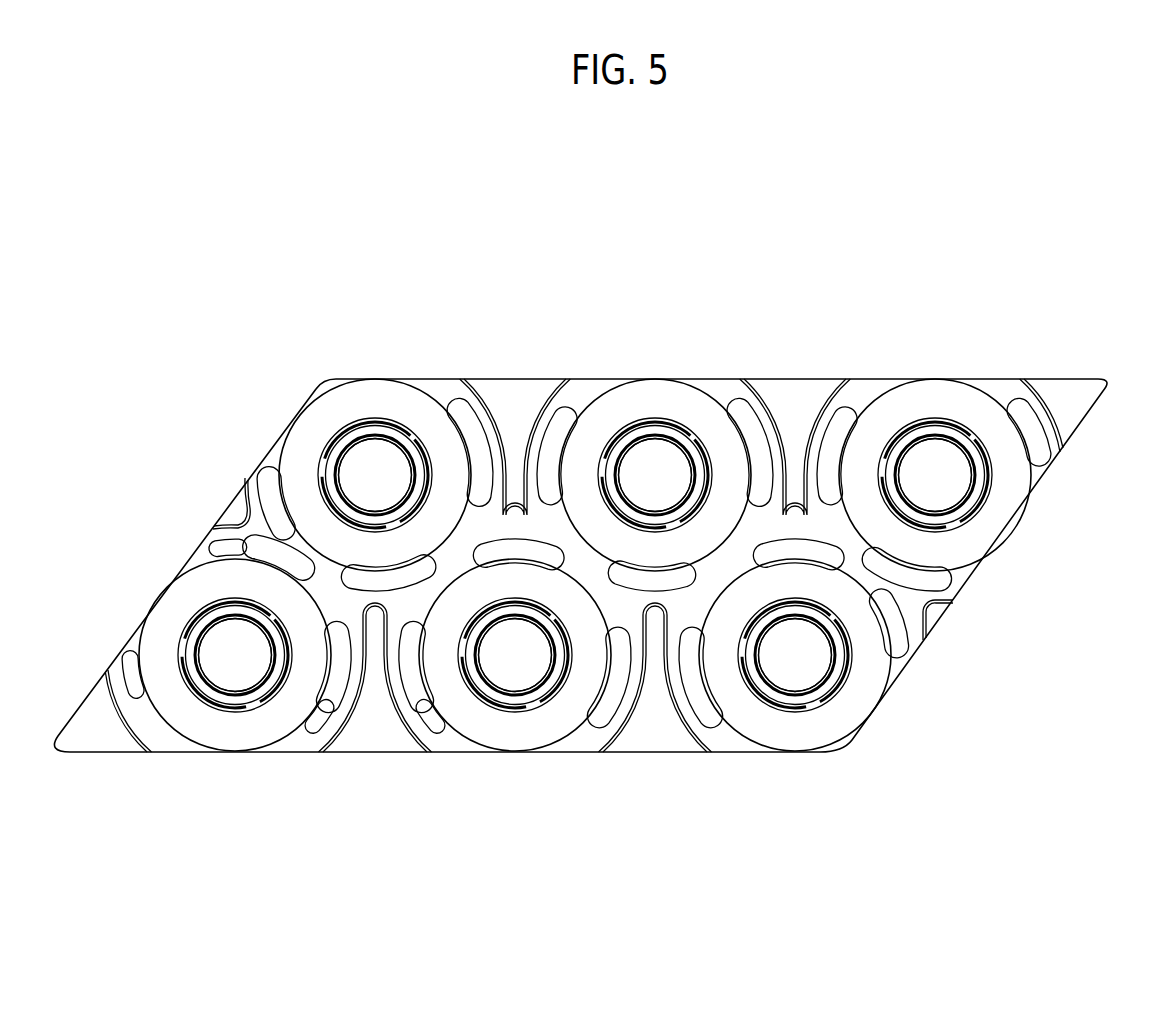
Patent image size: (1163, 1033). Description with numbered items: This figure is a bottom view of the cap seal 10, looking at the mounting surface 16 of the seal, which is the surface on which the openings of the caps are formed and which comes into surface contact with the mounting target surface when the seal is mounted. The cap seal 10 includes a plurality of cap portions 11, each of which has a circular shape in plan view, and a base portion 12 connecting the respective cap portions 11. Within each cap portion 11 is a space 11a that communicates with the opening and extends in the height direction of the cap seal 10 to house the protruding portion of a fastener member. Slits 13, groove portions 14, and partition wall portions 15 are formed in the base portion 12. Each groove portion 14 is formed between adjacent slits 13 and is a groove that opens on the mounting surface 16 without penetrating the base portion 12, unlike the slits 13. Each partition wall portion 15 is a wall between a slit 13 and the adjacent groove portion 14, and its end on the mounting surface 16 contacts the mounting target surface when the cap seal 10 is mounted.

The cap seal 10 is at (1106, 276).
The cap portion 11 is at (428, 390).
The space 11a is at (352, 491).
The base portion 12 is at (913, 686).
The slit 13 is at (225, 551).
The groove portion 14 is at (513, 408).
The partition wall portion 15 is at (348, 712).
The mounting surface 16 is at (912, 603).